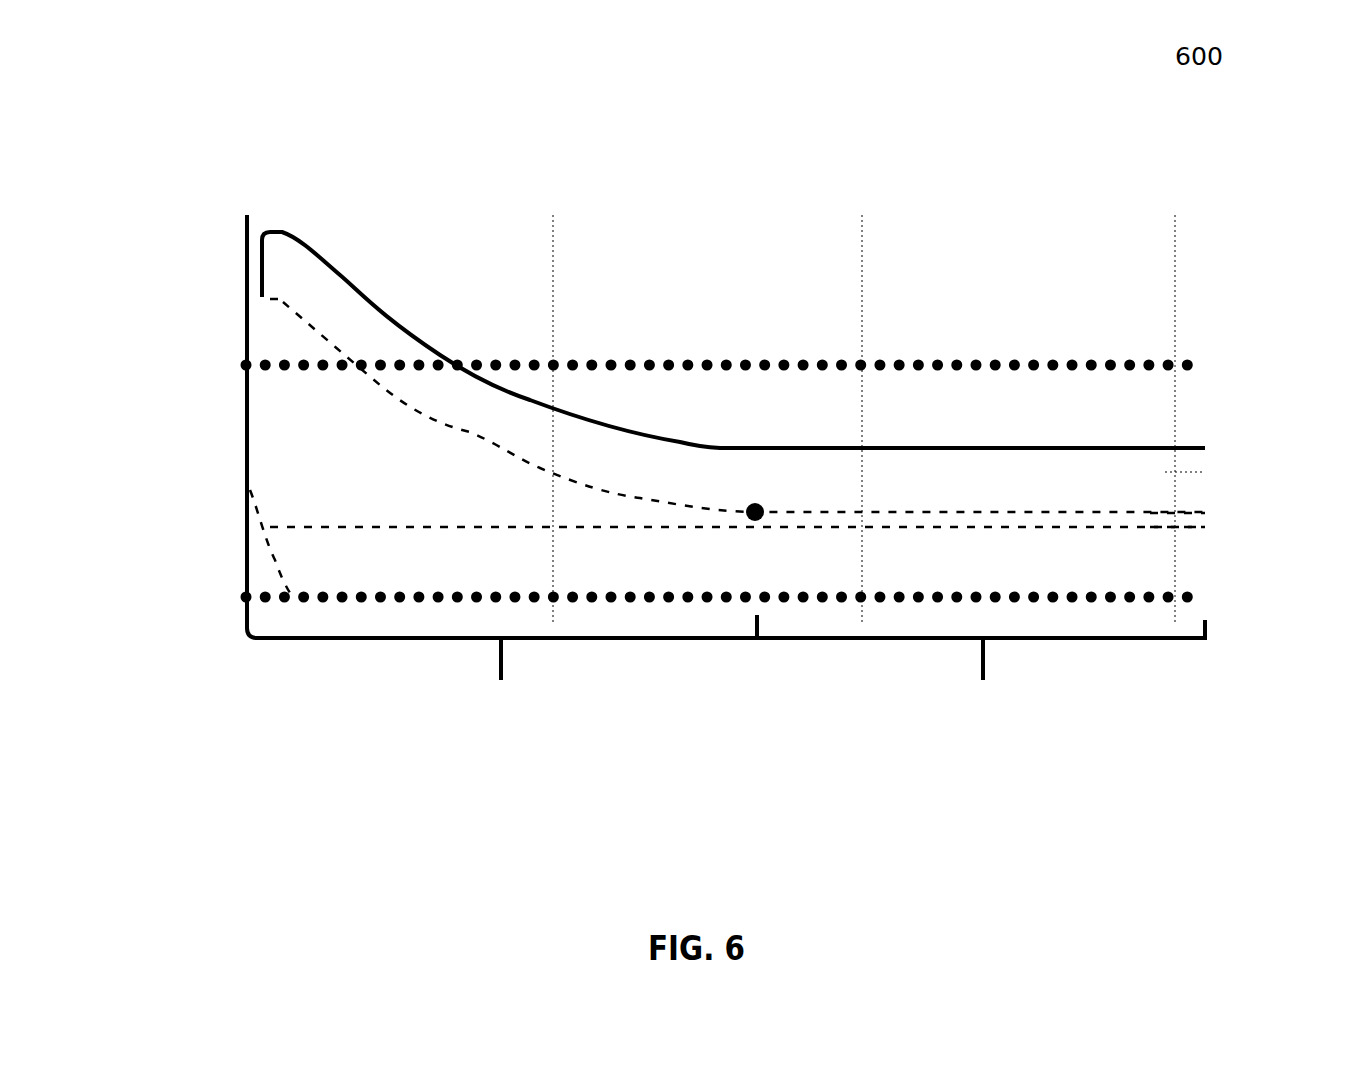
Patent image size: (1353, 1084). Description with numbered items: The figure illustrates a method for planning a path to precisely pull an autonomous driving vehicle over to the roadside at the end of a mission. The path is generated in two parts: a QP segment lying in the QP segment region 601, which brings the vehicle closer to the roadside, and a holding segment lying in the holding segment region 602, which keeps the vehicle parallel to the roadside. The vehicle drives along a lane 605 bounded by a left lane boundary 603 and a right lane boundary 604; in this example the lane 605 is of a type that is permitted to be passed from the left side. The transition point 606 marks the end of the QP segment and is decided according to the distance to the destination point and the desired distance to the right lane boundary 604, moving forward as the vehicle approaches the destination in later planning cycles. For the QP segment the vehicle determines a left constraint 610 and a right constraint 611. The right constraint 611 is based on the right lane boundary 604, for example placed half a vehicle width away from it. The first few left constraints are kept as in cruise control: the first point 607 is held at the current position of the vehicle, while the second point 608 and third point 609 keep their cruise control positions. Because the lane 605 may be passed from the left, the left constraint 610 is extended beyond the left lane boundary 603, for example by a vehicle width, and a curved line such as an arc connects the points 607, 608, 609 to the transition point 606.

The QP segment region 601 is at (402, 655).
The holding segment region 602 is at (1107, 655).
The left lane boundary 603 is at (290, 362).
The right lane boundary 604 is at (293, 597).
The lane 605 is at (1240, 520).
The transition point 606 is at (762, 505).
The first point 607 is at (243, 478).
The second point 608 is at (260, 297).
The third point 609 is at (282, 298).
The left constraint 610 is at (474, 433).
The right constraint 611 is at (642, 532).